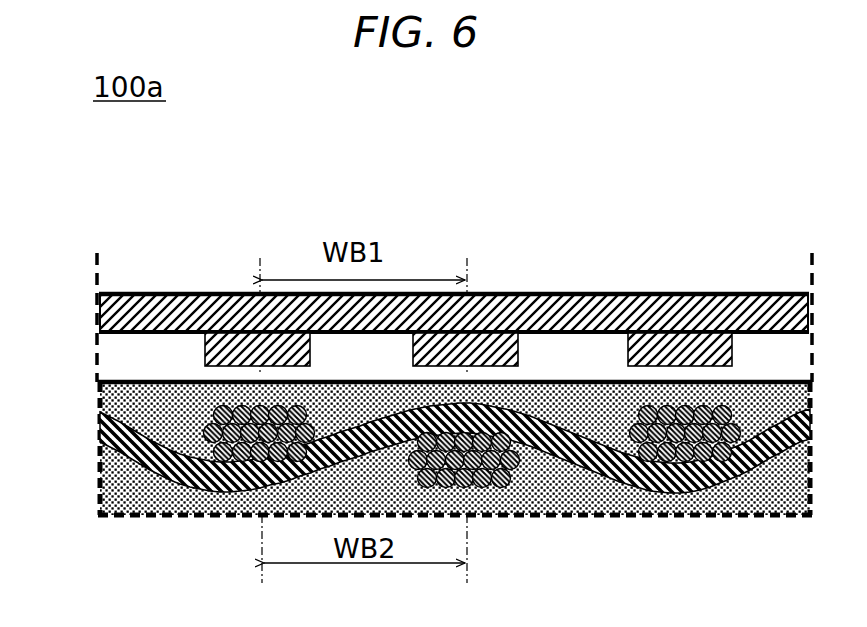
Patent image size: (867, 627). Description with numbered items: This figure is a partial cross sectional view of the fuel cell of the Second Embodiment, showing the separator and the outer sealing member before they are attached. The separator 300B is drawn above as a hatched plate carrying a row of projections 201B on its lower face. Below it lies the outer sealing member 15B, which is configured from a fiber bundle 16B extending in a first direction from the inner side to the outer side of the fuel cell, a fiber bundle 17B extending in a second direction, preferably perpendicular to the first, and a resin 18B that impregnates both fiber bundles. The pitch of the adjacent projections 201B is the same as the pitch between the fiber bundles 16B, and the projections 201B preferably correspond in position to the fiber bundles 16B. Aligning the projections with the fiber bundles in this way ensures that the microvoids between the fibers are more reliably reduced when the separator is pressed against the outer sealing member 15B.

The projections 201B is at (207, 338).
The separator 300B is at (568, 330).
The outer sealing member 15B is at (92, 382).
The fiber bundle 16B is at (232, 462).
The fiber bundle 17B is at (527, 433).
The resin 18B is at (583, 478).